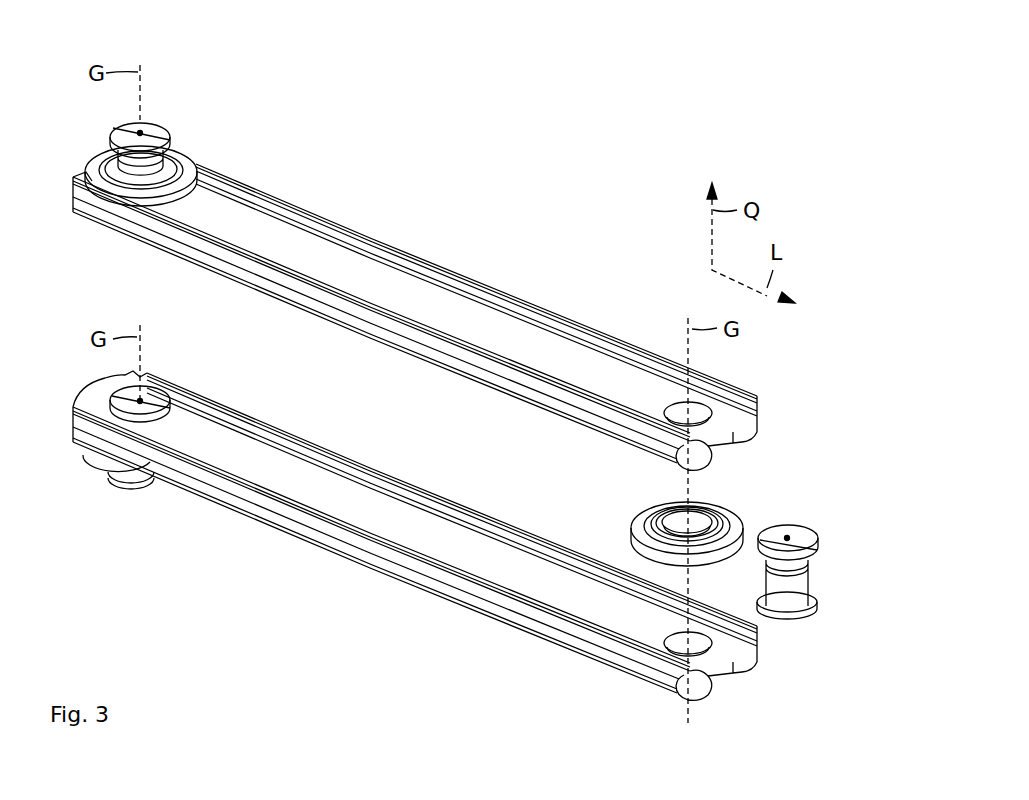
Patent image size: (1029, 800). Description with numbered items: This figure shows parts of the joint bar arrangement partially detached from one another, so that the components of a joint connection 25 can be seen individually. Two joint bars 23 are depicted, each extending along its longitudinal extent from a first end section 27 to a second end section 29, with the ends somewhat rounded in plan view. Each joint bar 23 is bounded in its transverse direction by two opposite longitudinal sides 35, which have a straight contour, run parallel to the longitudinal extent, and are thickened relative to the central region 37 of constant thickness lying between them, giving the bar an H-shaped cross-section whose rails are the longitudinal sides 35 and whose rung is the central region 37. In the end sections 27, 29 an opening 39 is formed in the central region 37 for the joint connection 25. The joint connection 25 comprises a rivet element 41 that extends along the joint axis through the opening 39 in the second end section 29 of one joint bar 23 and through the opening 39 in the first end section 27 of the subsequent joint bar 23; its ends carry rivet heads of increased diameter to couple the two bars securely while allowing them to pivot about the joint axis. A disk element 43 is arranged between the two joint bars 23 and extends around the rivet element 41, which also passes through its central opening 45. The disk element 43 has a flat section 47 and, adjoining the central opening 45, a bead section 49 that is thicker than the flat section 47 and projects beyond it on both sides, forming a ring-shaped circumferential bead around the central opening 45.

The joint bar 23 is at (500, 310).
The joint connection 25 is at (149, 127).
The first end section 27 is at (122, 213).
The second end section 29 is at (668, 397).
The longitudinal side 35 is at (378, 250).
The central region 37 is at (422, 303).
The opening 39 is at (703, 408).
The rivet element 41 is at (160, 165).
The disk element 43 is at (185, 163).
The central opening 45 is at (678, 520).
The flat section 47 is at (640, 525).
The bead section 49 is at (717, 522).